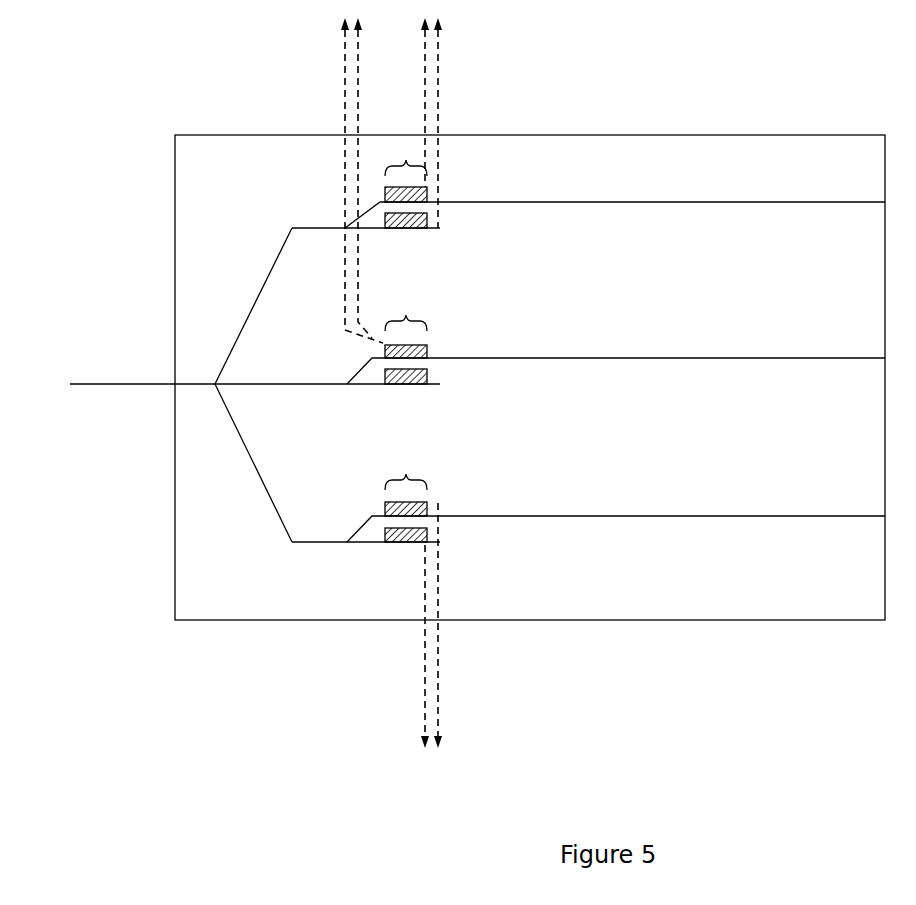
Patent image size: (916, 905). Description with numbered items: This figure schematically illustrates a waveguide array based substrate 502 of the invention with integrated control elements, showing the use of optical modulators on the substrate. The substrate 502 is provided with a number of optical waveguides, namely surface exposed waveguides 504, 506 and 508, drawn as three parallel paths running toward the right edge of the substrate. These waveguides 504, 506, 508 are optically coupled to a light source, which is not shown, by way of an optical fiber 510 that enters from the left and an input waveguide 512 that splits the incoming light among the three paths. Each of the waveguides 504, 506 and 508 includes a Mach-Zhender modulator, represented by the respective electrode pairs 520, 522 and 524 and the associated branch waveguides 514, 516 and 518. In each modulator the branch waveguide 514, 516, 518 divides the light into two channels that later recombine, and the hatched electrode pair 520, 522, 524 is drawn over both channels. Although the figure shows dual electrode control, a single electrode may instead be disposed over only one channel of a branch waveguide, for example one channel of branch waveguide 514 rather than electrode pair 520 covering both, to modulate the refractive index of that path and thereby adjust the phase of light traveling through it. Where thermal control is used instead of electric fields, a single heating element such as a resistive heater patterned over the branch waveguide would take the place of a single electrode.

The substrate 502 is at (175, 186).
The surface exposed waveguide 504 is at (688, 204).
The surface exposed waveguide 506 is at (677, 360).
The surface exposed waveguide 508 is at (678, 518).
The optical fiber 510 is at (133, 382).
The input waveguide 512 is at (187, 388).
The branch waveguide 514 is at (450, 205).
The branch waveguide 516 is at (440, 359).
The branch waveguide 518 is at (455, 518).
The electrode pair 520 is at (469, 173).
The electrode pair 522 is at (409, 357).
The electrode pair 524 is at (469, 513).